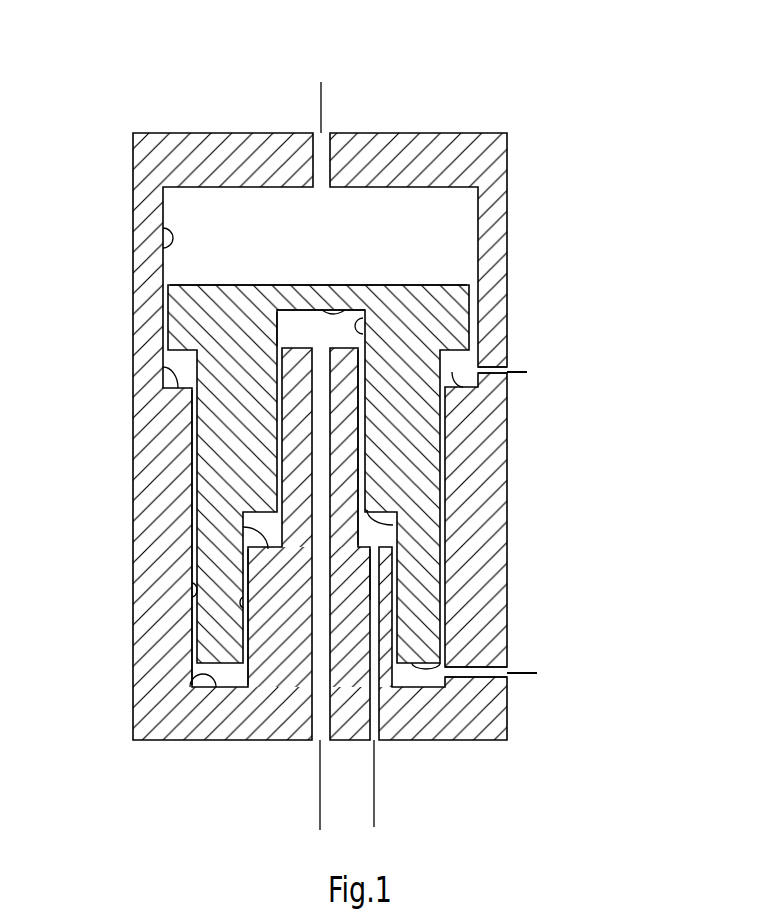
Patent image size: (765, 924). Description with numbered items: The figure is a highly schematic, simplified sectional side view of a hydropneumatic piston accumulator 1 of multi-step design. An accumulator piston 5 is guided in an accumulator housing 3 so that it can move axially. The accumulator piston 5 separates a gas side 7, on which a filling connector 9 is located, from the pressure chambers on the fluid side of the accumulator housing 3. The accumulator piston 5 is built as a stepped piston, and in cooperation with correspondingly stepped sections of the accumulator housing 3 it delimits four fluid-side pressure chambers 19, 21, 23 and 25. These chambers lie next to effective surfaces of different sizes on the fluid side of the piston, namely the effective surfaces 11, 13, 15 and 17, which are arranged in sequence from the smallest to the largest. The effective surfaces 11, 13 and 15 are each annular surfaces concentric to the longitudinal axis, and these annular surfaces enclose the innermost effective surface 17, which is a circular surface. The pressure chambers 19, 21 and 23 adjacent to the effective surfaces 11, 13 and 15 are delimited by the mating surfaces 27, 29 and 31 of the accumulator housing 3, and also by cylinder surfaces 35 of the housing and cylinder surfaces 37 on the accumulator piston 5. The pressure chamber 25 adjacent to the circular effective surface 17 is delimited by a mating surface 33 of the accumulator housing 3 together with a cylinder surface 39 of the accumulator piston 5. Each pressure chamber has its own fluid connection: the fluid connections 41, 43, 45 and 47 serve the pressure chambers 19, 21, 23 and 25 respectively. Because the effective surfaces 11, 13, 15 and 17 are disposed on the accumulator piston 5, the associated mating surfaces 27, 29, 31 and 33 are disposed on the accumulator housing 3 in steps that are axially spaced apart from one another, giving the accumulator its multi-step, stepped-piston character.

The hydropneumatic piston accumulator 1 is at (562, 115).
The accumulator housing 3 is at (155, 452).
The accumulator piston 5 is at (205, 312).
The gas side 7 is at (200, 212).
The filling connector 9 is at (323, 132).
The effective surface 11 is at (488, 365).
The effective surface 13 is at (447, 662).
The effective surface 15 is at (393, 525).
The effective surface 17 is at (373, 285).
The pressure chamber 19 is at (460, 387).
The pressure chamber 21 is at (417, 678).
The pressure chamber 23 is at (373, 537).
The pressure chamber 25 is at (307, 323).
The mating surface 27 is at (167, 367).
The mating surface 29 is at (193, 677).
The mating surface 31 is at (240, 533).
The mating surface 33 is at (295, 345).
The cylinder surfaces 35 is at (160, 250).
The cylinder surfaces 37 is at (197, 418).
The cylinder surface 39 is at (367, 333).
The fluid connection 41 is at (510, 375).
The fluid connection 43 is at (510, 670).
The fluid connection 45 is at (379, 743).
The fluid connection 47 is at (318, 742).